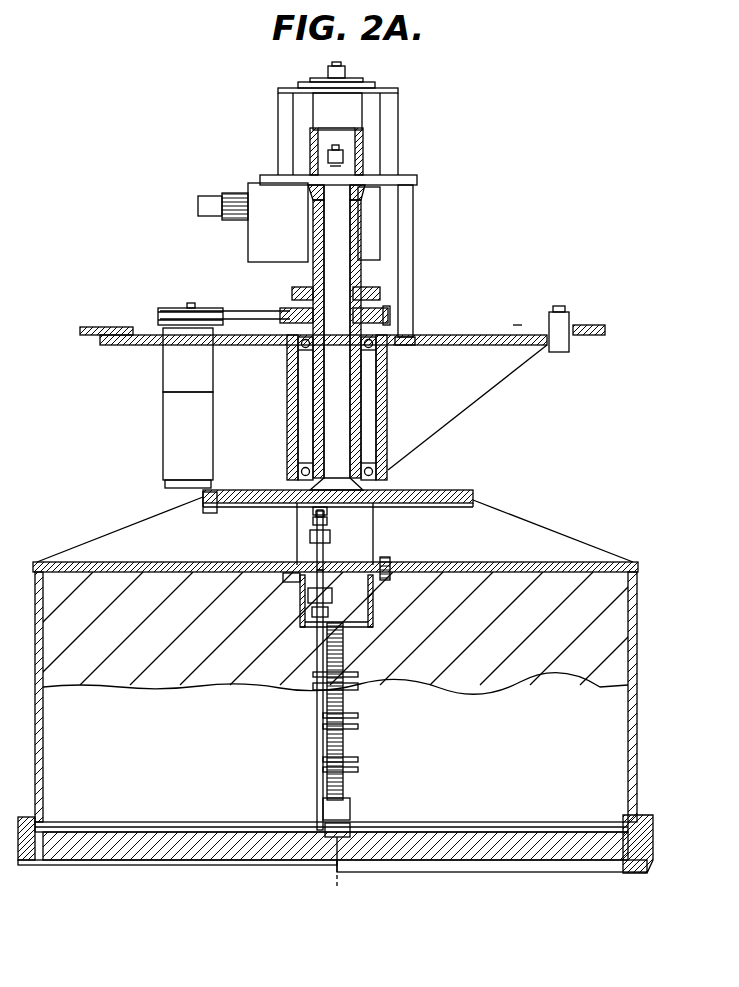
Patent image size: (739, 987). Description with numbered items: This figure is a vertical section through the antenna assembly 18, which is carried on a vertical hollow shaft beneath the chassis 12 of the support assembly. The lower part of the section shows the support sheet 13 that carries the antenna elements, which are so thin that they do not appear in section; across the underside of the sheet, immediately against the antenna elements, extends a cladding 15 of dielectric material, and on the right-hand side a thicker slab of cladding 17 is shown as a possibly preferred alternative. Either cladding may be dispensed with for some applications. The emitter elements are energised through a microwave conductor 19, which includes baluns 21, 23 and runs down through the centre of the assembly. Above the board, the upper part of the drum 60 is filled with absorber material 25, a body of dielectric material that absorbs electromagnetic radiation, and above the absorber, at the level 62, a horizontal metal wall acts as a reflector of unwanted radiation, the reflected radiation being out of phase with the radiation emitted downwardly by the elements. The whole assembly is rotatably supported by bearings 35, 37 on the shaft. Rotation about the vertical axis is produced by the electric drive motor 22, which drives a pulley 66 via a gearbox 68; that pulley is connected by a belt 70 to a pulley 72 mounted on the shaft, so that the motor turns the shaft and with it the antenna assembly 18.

The chassis 12 is at (465, 407).
The support sheet 13 is at (177, 832).
The cladding 15 is at (202, 847).
The slab of cladding 17 is at (433, 853).
The antenna assembly 18 is at (519, 869).
The microwave conductor 19 is at (315, 703).
The balun 21 is at (310, 533).
The electric drive motor 22 is at (177, 430).
The balun 23 is at (332, 593).
The absorber material 25 is at (502, 668).
The bearing 35 is at (388, 359).
The bearing 37 is at (378, 463).
The drum 60 is at (630, 710).
The level 62 is at (197, 568).
The pulley 66 is at (173, 307).
The gearbox 68 is at (173, 367).
The belt 70 is at (273, 315).
The pulley 72 is at (290, 305).